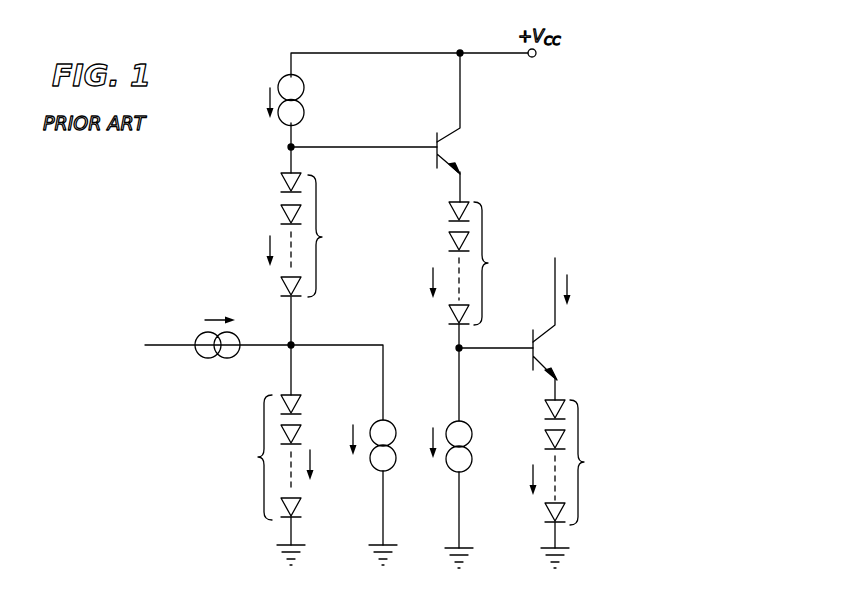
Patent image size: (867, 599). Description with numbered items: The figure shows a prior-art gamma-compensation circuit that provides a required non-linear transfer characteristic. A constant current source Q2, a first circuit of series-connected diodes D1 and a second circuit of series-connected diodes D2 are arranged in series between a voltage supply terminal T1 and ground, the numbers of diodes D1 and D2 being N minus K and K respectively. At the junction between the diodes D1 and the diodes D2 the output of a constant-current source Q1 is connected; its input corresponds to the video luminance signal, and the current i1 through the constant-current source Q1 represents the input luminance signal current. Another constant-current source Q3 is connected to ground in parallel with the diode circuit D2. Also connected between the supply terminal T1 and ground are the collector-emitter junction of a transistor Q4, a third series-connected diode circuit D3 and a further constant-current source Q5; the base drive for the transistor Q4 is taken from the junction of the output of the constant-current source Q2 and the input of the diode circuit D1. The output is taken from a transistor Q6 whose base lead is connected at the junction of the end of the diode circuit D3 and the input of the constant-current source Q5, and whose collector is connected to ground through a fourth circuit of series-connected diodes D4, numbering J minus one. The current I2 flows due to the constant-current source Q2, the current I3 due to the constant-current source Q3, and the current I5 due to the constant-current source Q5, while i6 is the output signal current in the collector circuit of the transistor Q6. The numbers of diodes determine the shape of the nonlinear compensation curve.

The constant-current source Q1 is at (212, 358).
The constant current source Q2 is at (304, 97).
The constant-current source Q3 is at (394, 466).
The transistor Q4 is at (440, 150).
The constant-current source Q5 is at (471, 442).
The transistor Q6 is at (538, 350).
The series-connected diodes D1 is at (336, 235).
The series-connected diodes D2 is at (261, 457).
The series-connected diode circuit D3 is at (488, 263).
The series-connected diodes D4 is at (597, 462).
The voltage supply terminal T1 is at (532, 58).
The current I2 is at (255, 177).
The current I3 is at (342, 437).
The current I5 is at (422, 363).
The input luminance signal current i1 is at (263, 386).
The output signal current i6 is at (549, 385).